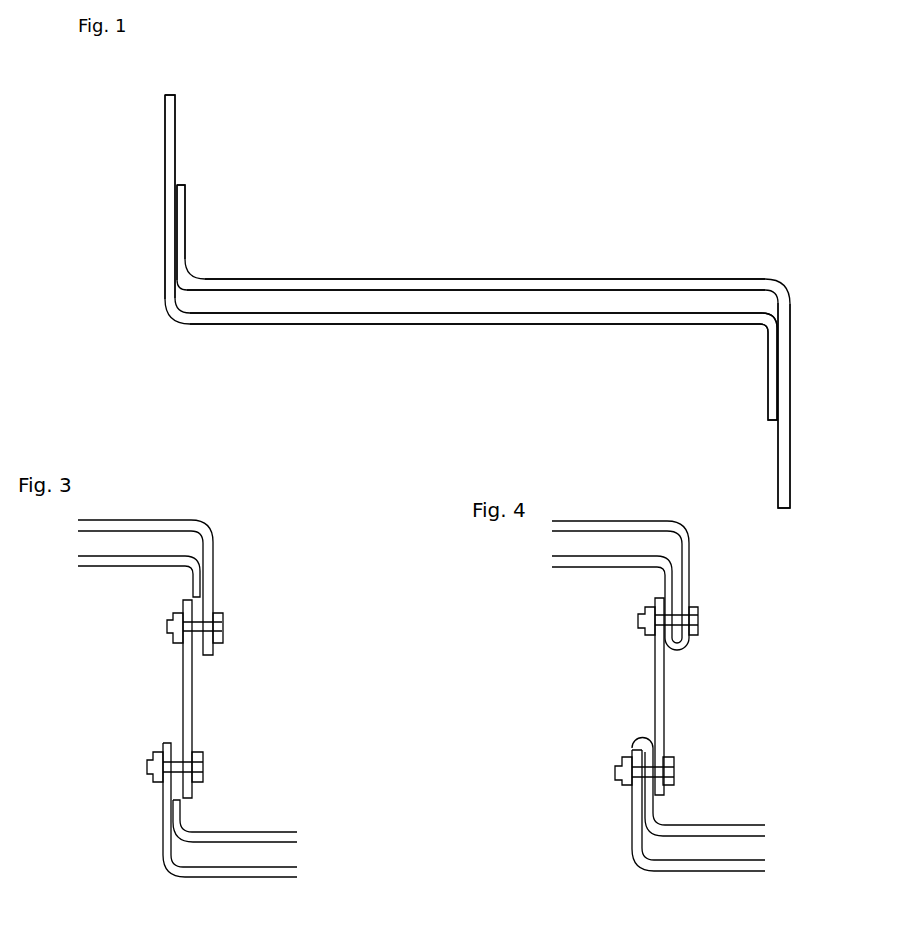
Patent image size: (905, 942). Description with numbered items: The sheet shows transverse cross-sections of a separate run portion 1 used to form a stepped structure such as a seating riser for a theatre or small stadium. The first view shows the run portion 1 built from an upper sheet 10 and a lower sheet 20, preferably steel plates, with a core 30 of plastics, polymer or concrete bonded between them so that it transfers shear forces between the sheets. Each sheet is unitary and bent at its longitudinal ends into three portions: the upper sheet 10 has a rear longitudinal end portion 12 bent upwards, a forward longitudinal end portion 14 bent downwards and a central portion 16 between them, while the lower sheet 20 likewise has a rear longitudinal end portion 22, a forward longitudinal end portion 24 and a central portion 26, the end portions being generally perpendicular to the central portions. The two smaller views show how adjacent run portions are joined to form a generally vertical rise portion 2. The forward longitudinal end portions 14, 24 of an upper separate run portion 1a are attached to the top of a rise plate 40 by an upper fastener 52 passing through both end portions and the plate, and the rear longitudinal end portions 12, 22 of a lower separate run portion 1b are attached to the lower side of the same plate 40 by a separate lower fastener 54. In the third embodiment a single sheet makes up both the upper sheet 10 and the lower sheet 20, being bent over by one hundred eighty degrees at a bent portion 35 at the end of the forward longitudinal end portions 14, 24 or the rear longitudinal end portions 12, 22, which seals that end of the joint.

In FIG. 1, the separate run portion 1 is at (677, 162).
In FIG. 3, the upper separate run portion 1a is at (102, 498).
In FIG. 4, the upper separate run portion 1a is at (575, 493).
In FIG. 3, the lower separate run portion 1b is at (292, 888).
In FIG. 4, the lower separate run portion 1b is at (767, 885).
In FIG. 3, the rise portion 2 is at (115, 695).
In FIG. 4, the rise portion 2 is at (590, 690).
In FIG. 1, the upper sheet 10 is at (592, 270).
In FIG. 1, the rear longitudinal end portion of upper sheet 12 is at (180, 208).
In FIG. 3, the rear longitudinal end portion of upper sheet 12 is at (178, 803).
In FIG. 4, the rear longitudinal end portion of upper sheet 12 is at (650, 798).
In FIG. 1, the forward longitudinal end portion of upper sheet 14 is at (785, 388).
In FIG. 3, the forward longitudinal end portion of upper sheet 14 is at (208, 588).
In FIG. 4, the forward longitudinal end portion of upper sheet 14 is at (682, 585).
In FIG. 1, the central portion of upper sheet 16 is at (487, 285).
In FIG. 3, the central portion of upper sheet 16 is at (117, 525).
In FIG. 4, the central portion of upper sheet 16 is at (590, 528).
In FIG. 1, the lower sheet 20 is at (600, 330).
In FIG. 1, the rear longitudinal end portion of lower sheet 22 is at (170, 135).
In FIG. 3, the rear longitudinal end portion of lower sheet 22 is at (168, 793).
In FIG. 4, the rear longitudinal end portion of lower sheet 22 is at (636, 798).
In FIG. 1, the forward longitudinal end portion of lower sheet 24 is at (773, 405).
In FIG. 3, the forward longitudinal end portion of lower sheet 24 is at (198, 597).
In FIG. 4, the forward longitudinal end portion of lower sheet 24 is at (673, 592).
In FIG. 1, the central portion of lower sheet 26 is at (487, 318).
In FIG. 3, the central portion of lower sheet 26 is at (115, 565).
In FIG. 4, the central portion of lower sheet 26 is at (588, 560).
In FIG. 1, the core 30 is at (645, 303).
In FIG. 4, the bent portion 35 is at (675, 647).
In FIG. 3, the rise plate 40 is at (186, 690).
In FIG. 4, the rise plate 40 is at (660, 690).
In FIG. 3, the upper fastener 52 is at (223, 627).
In FIG. 4, the upper fastener 52 is at (693, 625).
In FIG. 3, the lower fastener 54 is at (197, 767).
In FIG. 4, the lower fastener 54 is at (673, 762).